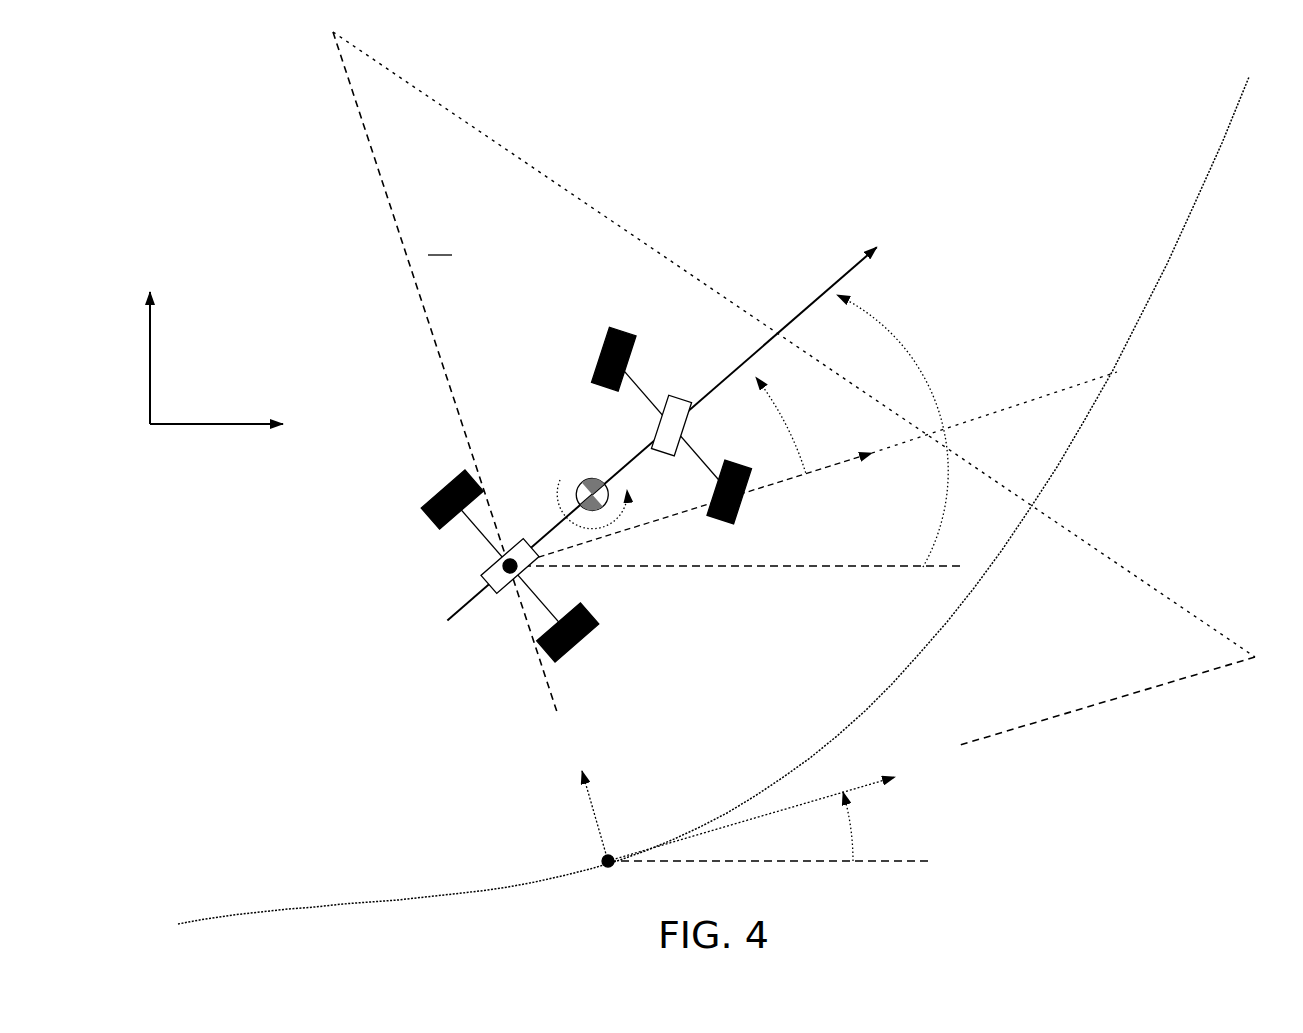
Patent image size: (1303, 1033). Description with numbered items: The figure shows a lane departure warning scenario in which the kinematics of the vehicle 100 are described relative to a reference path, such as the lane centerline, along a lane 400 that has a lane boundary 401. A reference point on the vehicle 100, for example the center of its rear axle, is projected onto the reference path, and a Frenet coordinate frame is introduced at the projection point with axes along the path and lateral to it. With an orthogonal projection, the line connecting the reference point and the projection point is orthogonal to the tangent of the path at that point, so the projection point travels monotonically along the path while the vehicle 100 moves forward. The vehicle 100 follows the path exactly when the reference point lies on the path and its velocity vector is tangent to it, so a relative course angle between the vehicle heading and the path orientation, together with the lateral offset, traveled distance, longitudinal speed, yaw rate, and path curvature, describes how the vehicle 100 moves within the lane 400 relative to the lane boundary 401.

The vehicle 100 is at (627, 583).
The lane 400 is at (1010, 171).
The lane boundary 401 is at (1183, 224).